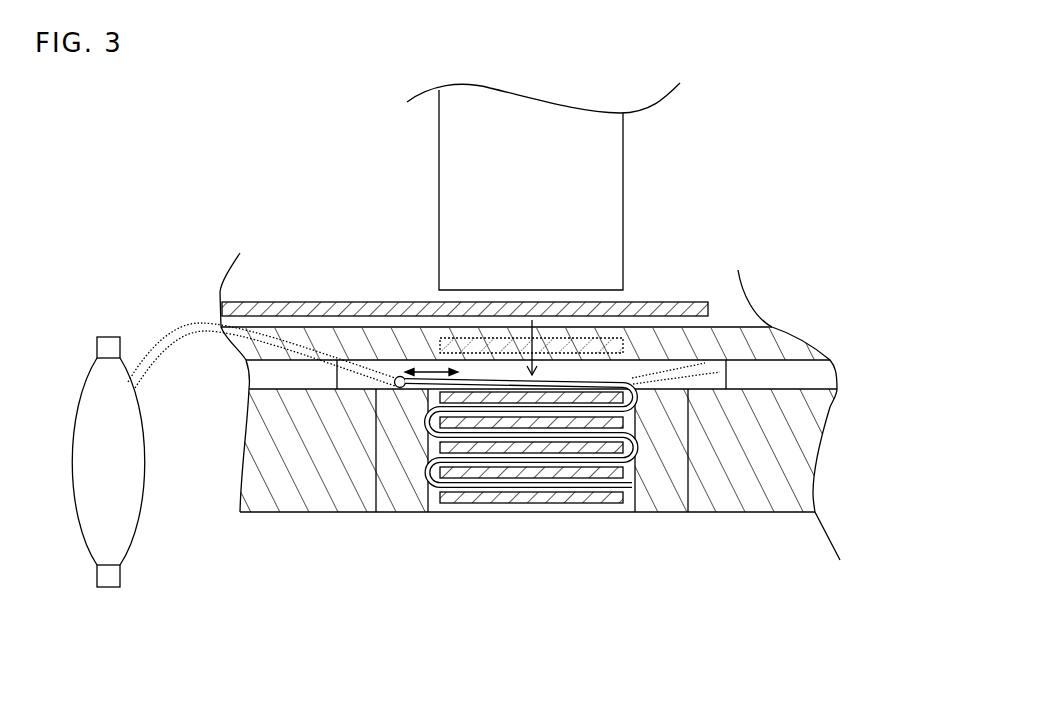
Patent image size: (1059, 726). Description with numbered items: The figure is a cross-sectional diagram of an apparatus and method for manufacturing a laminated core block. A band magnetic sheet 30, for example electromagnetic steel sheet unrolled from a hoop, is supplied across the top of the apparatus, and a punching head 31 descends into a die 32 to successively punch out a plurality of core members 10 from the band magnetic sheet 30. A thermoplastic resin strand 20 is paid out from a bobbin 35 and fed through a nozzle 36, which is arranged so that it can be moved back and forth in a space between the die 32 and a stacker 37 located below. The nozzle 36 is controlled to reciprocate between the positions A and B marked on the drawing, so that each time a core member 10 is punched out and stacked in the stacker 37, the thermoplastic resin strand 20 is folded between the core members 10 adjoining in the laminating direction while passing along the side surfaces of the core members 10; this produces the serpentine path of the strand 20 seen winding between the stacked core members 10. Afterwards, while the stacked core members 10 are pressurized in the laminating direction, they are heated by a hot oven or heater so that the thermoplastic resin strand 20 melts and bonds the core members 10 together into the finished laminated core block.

The core member 10 is at (500, 497).
The thermoplastic resin strand 20 is at (568, 488).
The band magnetic sheet 30 is at (273, 302).
The punching head 31 is at (588, 212).
The die 32 is at (802, 343).
The bobbin 35 is at (110, 523).
The nozzle 36 is at (383, 372).
The stacker 37 is at (770, 488).
The position A is at (376, 512).
The position B is at (688, 512).